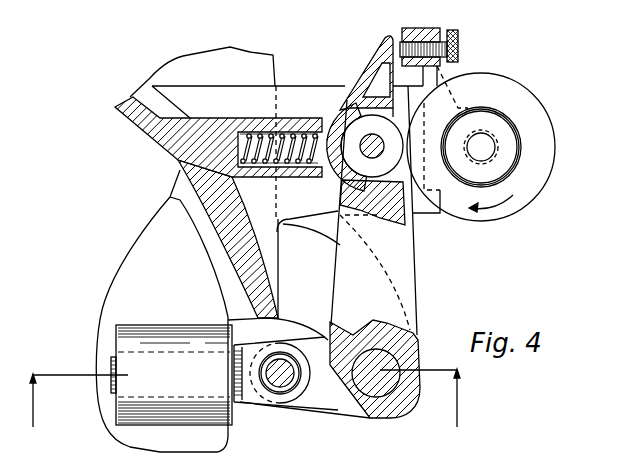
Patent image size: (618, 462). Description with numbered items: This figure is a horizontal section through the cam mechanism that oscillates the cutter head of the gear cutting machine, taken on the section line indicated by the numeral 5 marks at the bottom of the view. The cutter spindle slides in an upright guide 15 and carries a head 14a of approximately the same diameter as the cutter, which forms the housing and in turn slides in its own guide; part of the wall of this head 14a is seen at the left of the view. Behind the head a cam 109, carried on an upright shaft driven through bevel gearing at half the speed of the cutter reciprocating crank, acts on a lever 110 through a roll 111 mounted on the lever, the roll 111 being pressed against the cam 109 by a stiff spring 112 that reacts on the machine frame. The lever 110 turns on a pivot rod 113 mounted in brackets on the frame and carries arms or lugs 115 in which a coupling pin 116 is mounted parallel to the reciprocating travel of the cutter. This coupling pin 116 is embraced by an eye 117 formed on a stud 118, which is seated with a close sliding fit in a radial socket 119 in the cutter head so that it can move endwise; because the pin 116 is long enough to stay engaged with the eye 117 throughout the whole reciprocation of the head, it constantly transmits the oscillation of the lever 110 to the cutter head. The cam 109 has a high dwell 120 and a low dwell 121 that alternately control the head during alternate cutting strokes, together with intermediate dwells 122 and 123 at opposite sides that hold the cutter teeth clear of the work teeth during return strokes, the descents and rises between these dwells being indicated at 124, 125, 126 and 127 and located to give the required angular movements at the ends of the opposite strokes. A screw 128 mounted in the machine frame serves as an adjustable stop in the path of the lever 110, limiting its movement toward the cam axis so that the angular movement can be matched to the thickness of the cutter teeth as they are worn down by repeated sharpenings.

The upright guide 15 is at (162, 117).
The head 14a is at (198, 259).
The stiff spring 112 is at (303, 177).
The radial socket 119 is at (163, 358).
The stud 118 is at (111, 367).
The section line 5- 5 is at (245, 411).
The lever 110 is at (403, 285).
The roll 111 is at (412, 165).
The high dwell 120 is at (422, 86).
The screw 128 is at (450, 31).
The cam rise or descent 127 is at (470, 77).
The intermediate dwell 123 is at (532, 96).
The low dwell 121 is at (545, 183).
The cam rise or descent 126 is at (556, 145).
The cam rise or descent 124 is at (404, 156).
The cam rise or descent 125 is at (473, 218).
The intermediate dwell 122 is at (444, 216).
The cam 109 is at (508, 207).
The pivot rod 113 is at (383, 388).
The arms or lugs 115 is at (333, 406).
The coupling pin 116 is at (305, 410).
The eye 117 is at (286, 384).